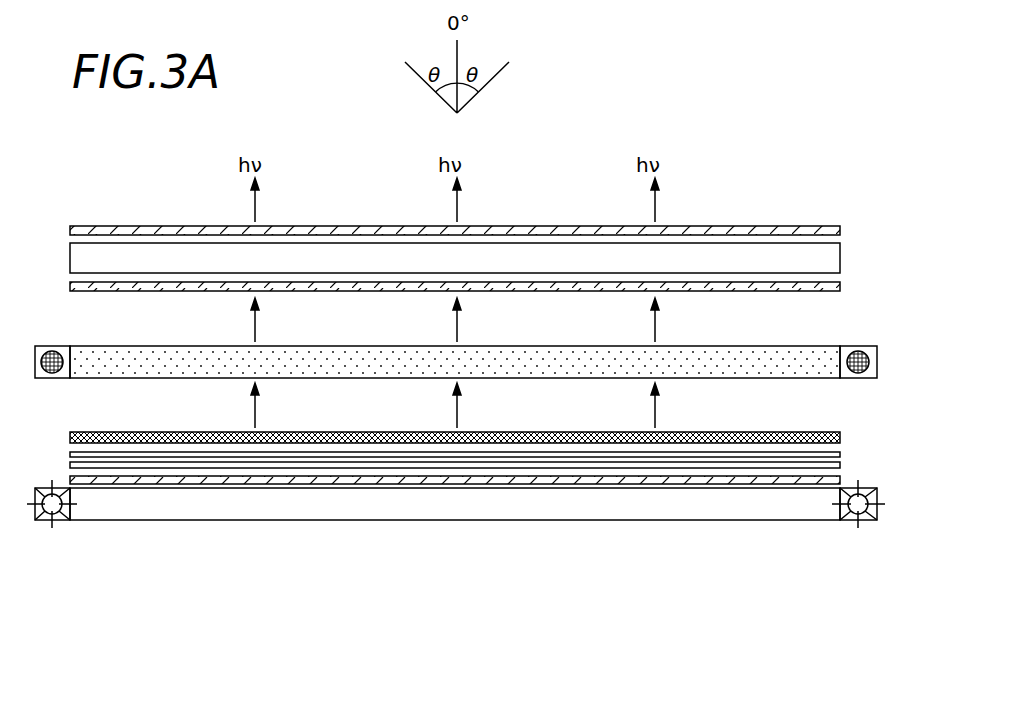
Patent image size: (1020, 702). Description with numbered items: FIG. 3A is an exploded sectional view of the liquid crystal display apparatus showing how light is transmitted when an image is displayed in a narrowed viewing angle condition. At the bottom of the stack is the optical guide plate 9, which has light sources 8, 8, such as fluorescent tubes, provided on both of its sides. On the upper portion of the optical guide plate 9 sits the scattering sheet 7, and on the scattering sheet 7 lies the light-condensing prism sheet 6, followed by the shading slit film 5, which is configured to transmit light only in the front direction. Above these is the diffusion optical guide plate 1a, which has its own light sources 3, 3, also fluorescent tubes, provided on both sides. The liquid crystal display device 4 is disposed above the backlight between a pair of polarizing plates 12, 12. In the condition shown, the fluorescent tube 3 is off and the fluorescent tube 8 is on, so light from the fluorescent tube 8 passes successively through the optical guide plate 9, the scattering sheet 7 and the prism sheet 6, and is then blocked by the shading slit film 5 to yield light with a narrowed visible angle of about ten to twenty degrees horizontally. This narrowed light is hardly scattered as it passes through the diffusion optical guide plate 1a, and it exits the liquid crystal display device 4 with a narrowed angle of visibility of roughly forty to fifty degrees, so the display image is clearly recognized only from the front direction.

The polarizing plate 12 is at (78, 228).
The liquid crystal display device 4 is at (841, 258).
The diffusion optical guide plate 1a is at (768, 357).
The light source 3 is at (49, 380).
The shading slit film 5 is at (808, 432).
The light-condensing prism sheet 6 is at (842, 456).
The scattering sheet 7 is at (843, 479).
The light source 8 is at (45, 522).
The optical guide plate 9 is at (803, 516).